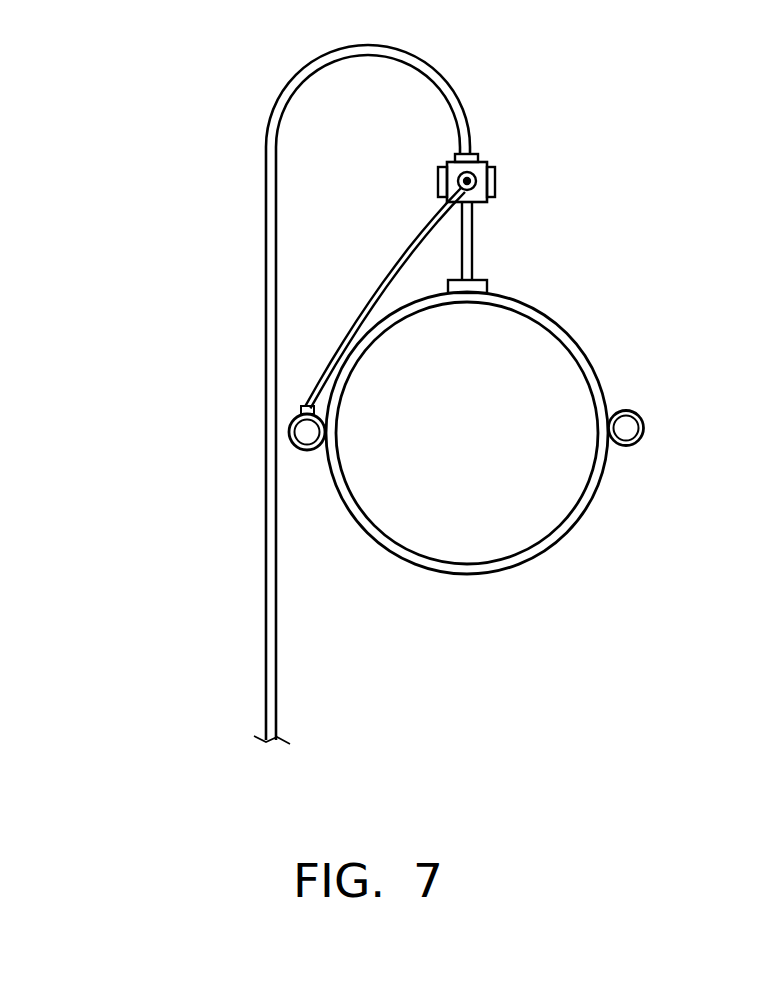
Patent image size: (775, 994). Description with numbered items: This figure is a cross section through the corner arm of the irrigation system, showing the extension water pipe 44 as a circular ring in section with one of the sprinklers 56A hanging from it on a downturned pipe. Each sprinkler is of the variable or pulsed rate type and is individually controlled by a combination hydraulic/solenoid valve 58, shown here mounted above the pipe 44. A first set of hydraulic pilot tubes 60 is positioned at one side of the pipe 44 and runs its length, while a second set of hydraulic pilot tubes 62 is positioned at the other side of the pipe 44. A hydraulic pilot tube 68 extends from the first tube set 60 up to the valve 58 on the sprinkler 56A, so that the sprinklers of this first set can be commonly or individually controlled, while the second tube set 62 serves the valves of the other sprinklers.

The extension water pipe 44 is at (510, 567).
The sprinkler 56A is at (267, 567).
The hydraulic/solenoid valve 58 is at (487, 177).
The first set of hydraulic pilot tubes 60 is at (290, 423).
The second set of hydraulic pilot tubes 62 is at (638, 440).
The hydraulic pilot tube 68 is at (408, 255).